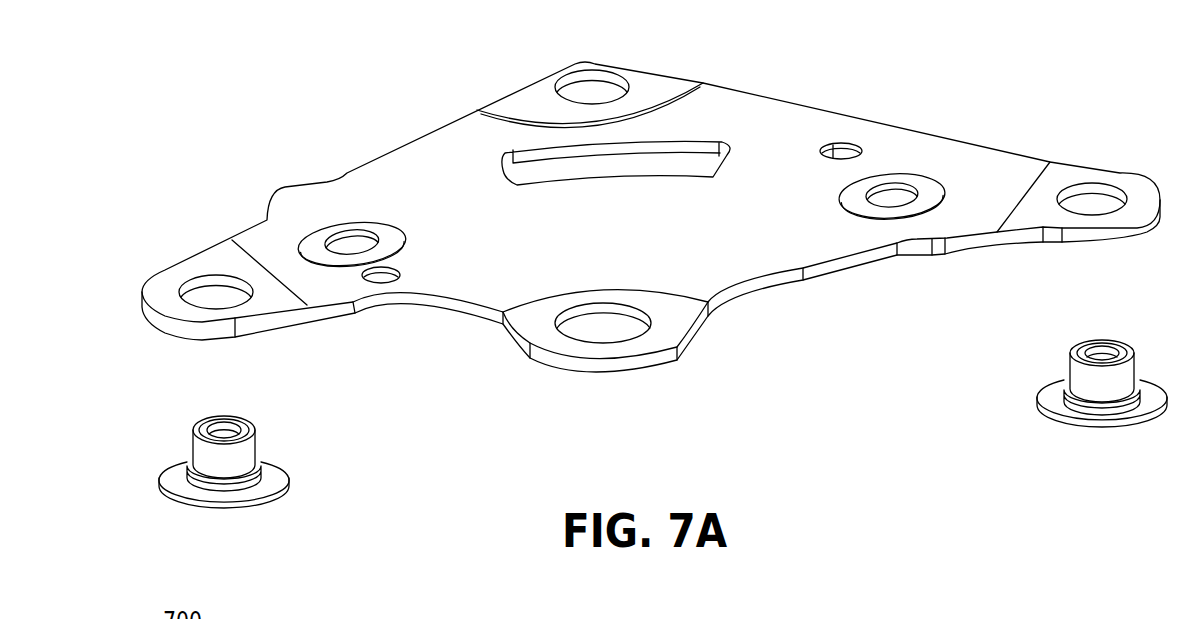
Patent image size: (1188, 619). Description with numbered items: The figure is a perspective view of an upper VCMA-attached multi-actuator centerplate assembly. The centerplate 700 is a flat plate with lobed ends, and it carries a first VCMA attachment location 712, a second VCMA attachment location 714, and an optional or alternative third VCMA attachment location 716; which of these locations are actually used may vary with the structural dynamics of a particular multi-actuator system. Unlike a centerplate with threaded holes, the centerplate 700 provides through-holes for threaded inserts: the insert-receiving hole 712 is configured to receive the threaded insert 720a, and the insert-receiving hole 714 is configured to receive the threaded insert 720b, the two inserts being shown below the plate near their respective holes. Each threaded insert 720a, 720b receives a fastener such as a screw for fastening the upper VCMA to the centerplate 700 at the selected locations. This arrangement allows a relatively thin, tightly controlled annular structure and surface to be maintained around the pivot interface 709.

The centerplate 700 is at (275, 76).
The pivot interface 709 is at (620, 330).
The first VCMA attachment location 712 is at (217, 297).
The second VCMA attachment location 714 is at (1095, 207).
The third VCMA attachment location 716 is at (593, 93).
The threaded insert 720a is at (277, 467).
The threaded insert 720b is at (1050, 400).